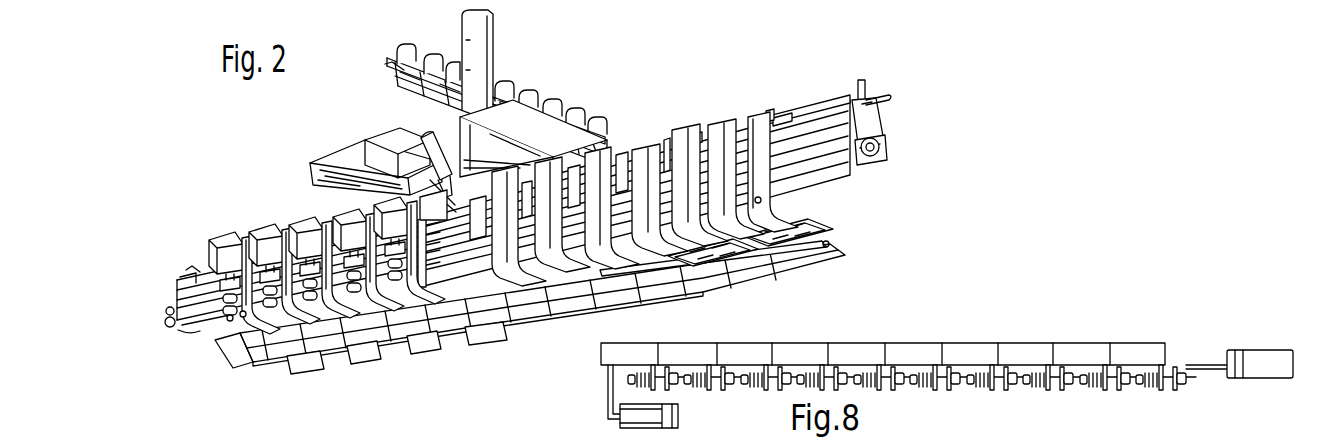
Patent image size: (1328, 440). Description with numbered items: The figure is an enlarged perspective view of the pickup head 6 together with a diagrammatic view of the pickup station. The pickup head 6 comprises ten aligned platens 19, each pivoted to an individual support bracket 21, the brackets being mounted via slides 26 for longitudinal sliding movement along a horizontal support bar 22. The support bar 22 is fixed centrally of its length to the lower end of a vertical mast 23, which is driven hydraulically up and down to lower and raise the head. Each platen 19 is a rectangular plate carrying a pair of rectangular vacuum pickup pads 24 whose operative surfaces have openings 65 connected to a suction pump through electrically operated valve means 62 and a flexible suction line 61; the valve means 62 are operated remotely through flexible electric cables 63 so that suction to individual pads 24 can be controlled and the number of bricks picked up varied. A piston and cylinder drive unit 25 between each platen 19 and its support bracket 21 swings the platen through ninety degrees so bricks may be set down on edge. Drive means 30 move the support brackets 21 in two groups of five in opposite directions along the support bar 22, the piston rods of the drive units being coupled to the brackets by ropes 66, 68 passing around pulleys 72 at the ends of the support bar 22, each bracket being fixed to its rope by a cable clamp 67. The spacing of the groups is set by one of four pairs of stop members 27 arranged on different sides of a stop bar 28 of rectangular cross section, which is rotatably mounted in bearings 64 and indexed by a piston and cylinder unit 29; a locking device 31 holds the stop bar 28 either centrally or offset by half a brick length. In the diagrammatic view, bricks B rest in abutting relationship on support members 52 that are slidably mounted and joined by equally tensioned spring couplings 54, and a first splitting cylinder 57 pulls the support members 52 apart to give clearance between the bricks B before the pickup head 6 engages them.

In FIG. 2, the pickup head 6 is at (605, 93).
In FIG. 2, the platen 19 is at (690, 280).
In FIG. 2, the support bracket 21 is at (330, 250).
In FIG. 2, the support bar 22 is at (843, 182).
In FIG. 2, the vertical mast 23 is at (465, 30).
In FIG. 2, the vacuum pickup pad 24 is at (793, 262).
In FIG. 2, the piston and cylinder drive unit 25 is at (720, 140).
In FIG. 2, the slide 26 is at (805, 167).
In FIG. 2, the stop member 27 is at (697, 133).
In FIG. 2, the stop bar 28 is at (812, 110).
In FIG. 2, the piston and cylinder unit 29 is at (426, 140).
In FIG. 2, the drive means 30 is at (868, 155).
In FIG. 2, the locking device 31 is at (862, 108).
In FIG. 2, the flexible suction line 61 is at (385, 58).
In FIG. 2, the electrically operated valve means 62 is at (243, 317).
In FIG. 2, the flexible electric cable 63 is at (403, 56).
In FIG. 2, the bearing 64 is at (868, 112).
In FIG. 2, the opening 65 is at (717, 275).
In FIG. 2, the rope 66 is at (192, 304).
In FIG. 2, the cable clamp 67 is at (773, 188).
In FIG. 2, the rope 68 is at (187, 332).
In FIG. 2, the pulley 72 is at (882, 148).
In FIG. 8, the brick B is at (1128, 343).
In FIG. 8, the support member 52 is at (937, 387).
In FIG. 8, the spring coupling 54 is at (1027, 387).
In FIG. 8, the first splitting cylinder 57 is at (1258, 350).